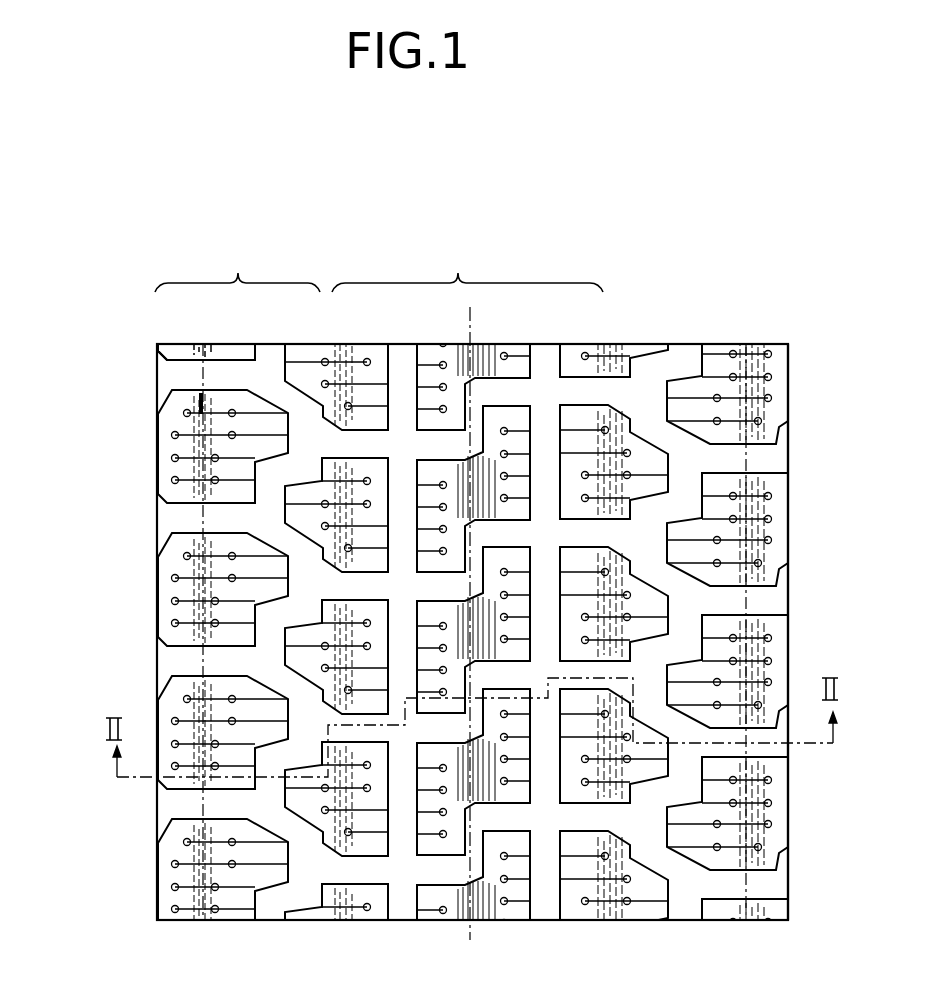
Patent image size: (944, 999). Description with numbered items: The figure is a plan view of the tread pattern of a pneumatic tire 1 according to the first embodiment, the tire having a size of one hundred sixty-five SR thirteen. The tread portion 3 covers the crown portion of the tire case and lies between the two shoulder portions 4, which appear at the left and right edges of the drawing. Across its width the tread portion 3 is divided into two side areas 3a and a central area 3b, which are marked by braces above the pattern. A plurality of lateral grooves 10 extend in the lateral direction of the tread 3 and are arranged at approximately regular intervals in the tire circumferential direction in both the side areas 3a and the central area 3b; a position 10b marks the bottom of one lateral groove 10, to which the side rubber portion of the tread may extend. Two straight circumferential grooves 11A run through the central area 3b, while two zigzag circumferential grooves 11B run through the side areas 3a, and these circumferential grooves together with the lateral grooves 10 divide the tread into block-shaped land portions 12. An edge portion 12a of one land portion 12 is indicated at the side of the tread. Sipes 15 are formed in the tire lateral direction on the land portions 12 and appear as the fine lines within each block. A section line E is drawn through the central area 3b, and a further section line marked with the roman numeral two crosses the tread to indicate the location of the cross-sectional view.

The pneumatic tire 1 is at (680, 313).
The tread portion 3 is at (692, 343).
The side areas 3a is at (237, 265).
The central area 3b is at (467, 265).
The shoulder portions 4 is at (791, 518).
The lateral grooves 10 is at (176, 661).
The position of bottom of lateral groove 10b is at (752, 750).
The straight circumferential grooves 11A is at (400, 343).
The zigzag circumferential grooves 11B is at (265, 343).
The block-shaped land portions 12 is at (177, 504).
The pad edge portion 12a is at (157, 448).
The sipes 15 is at (201, 408).
The section line E is at (472, 320).